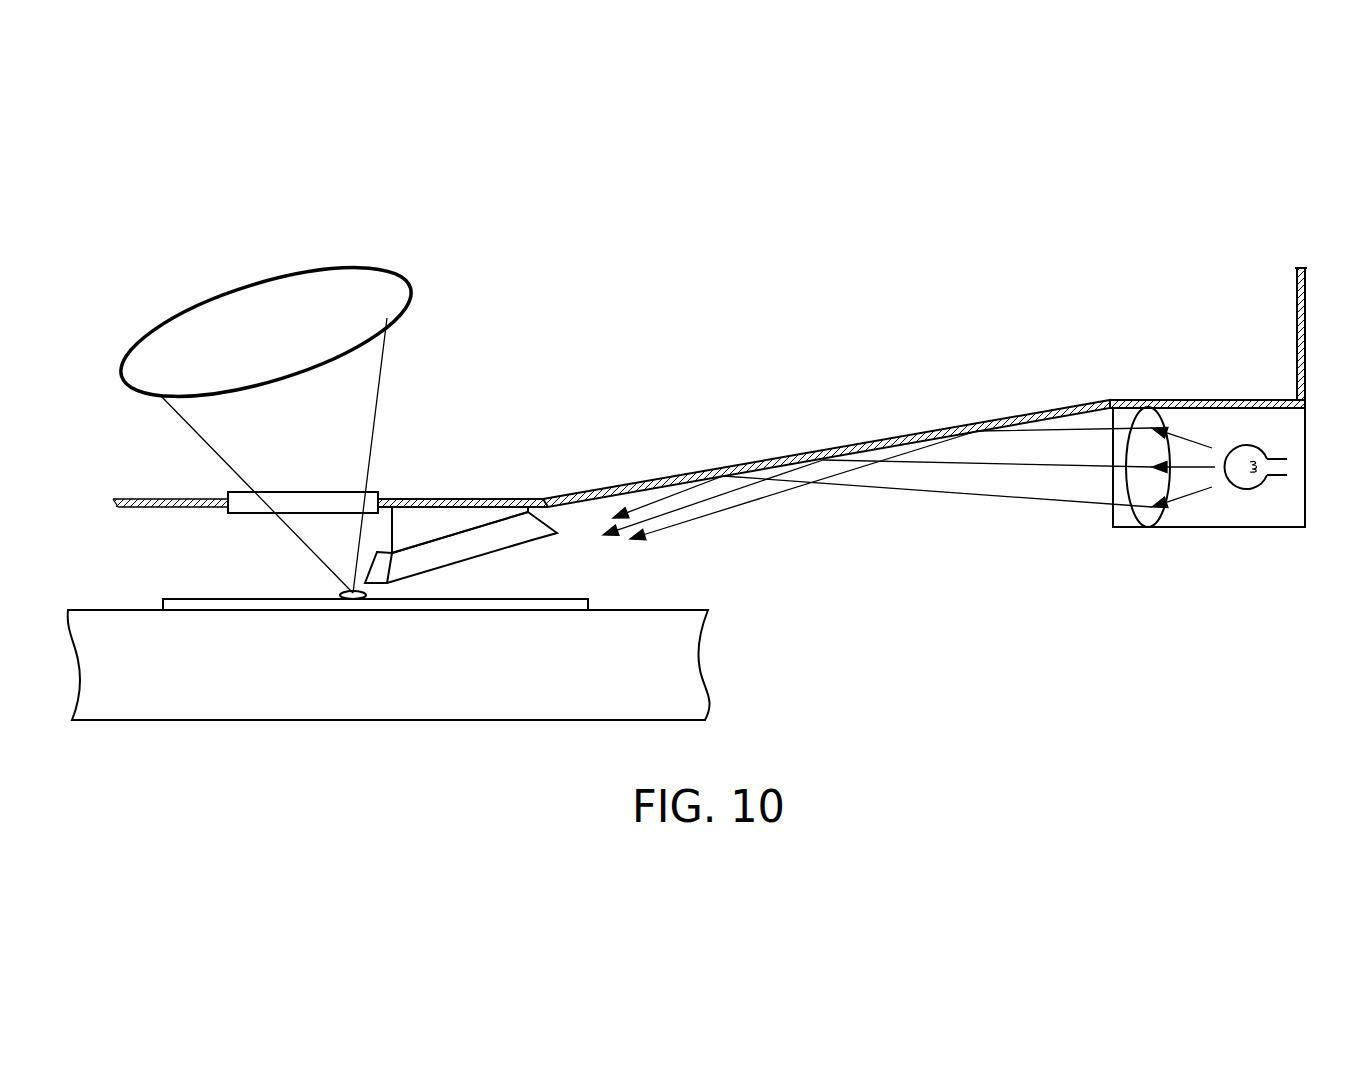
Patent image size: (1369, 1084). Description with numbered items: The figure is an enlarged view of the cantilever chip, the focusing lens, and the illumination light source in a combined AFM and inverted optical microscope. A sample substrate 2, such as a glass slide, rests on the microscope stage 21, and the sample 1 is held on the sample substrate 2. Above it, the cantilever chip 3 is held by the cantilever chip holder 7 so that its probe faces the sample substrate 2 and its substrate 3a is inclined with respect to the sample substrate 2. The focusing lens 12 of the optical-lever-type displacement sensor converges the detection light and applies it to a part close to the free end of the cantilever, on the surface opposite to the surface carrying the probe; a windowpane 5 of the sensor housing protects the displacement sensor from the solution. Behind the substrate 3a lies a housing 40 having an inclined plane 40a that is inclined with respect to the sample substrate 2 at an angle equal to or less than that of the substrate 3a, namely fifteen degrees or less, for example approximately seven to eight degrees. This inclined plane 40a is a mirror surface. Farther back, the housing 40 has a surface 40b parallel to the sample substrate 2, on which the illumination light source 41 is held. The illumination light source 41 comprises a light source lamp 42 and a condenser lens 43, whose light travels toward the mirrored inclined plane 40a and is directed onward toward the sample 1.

The sample 1 is at (340, 593).
The sample substrate 2 is at (560, 598).
The cantilever chip 3 is at (461, 520).
The substrate 3a is at (480, 540).
The windowpane 5 is at (242, 515).
The cantilever chip holder 7 is at (430, 515).
The focusing lens 12 is at (372, 273).
The microscope stage 21 is at (107, 610).
The housing 40 is at (733, 387).
The inclined plane 40a is at (645, 481).
The surface 40b is at (1203, 398).
The illumination light source 41 is at (1205, 520).
The light source lamp 42 is at (1247, 490).
The condenser lens 43 is at (1135, 522).